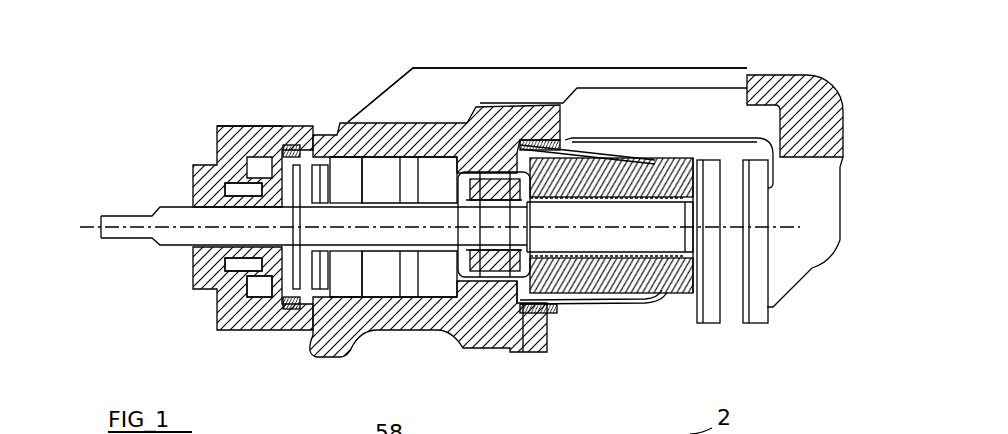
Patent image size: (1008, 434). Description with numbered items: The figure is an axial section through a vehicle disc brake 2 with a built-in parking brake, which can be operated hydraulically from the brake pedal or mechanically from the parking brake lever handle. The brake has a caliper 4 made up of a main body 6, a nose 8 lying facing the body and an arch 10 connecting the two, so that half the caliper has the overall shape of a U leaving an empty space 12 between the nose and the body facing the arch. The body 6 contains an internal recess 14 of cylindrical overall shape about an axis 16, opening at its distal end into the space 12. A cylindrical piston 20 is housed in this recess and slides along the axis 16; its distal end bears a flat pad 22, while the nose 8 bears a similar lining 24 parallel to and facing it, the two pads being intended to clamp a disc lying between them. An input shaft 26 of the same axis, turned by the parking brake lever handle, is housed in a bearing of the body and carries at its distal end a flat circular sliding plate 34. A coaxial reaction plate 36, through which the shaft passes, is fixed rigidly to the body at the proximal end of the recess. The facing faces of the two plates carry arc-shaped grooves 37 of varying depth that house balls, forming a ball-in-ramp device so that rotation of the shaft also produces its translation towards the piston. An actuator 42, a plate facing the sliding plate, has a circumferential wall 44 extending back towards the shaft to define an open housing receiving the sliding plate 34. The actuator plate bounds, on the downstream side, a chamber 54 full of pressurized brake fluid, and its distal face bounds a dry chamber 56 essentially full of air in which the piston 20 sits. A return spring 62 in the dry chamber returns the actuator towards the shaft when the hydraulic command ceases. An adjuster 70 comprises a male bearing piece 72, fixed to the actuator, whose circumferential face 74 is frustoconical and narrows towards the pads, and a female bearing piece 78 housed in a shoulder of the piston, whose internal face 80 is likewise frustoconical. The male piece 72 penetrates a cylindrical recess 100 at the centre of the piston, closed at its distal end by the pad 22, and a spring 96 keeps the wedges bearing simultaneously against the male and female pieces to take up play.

The brake 2 is at (680, 56).
The caliper 4 is at (478, 85).
The main body 6 is at (336, 290).
The nose 8 is at (788, 265).
The arch 10 is at (635, 97).
The empty space 12 is at (642, 318).
The internal recess 14 is at (346, 168).
The axis 16 is at (87, 232).
The piston 20 is at (580, 300).
The pad 22 is at (707, 305).
The lining 24 is at (765, 310).
The input shaft 26 is at (173, 217).
The sliding plate 34 is at (262, 300).
The reaction plate 36 is at (240, 125).
The grooves 37 is at (266, 262).
The actuator 42 is at (268, 276).
The circumferential wall 44 is at (285, 140).
The chamber 54 is at (243, 307).
The dry chamber 56 is at (445, 162).
The return spring 62 is at (330, 300).
The adjuster 70 is at (512, 294).
The male bearing piece 72 is at (427, 248).
The circumferential face 74 is at (417, 186).
The female bearing piece 78 is at (503, 190).
The internal face 80 is at (540, 222).
The spring 96 is at (470, 268).
The cylindrical recess 100 is at (678, 200).